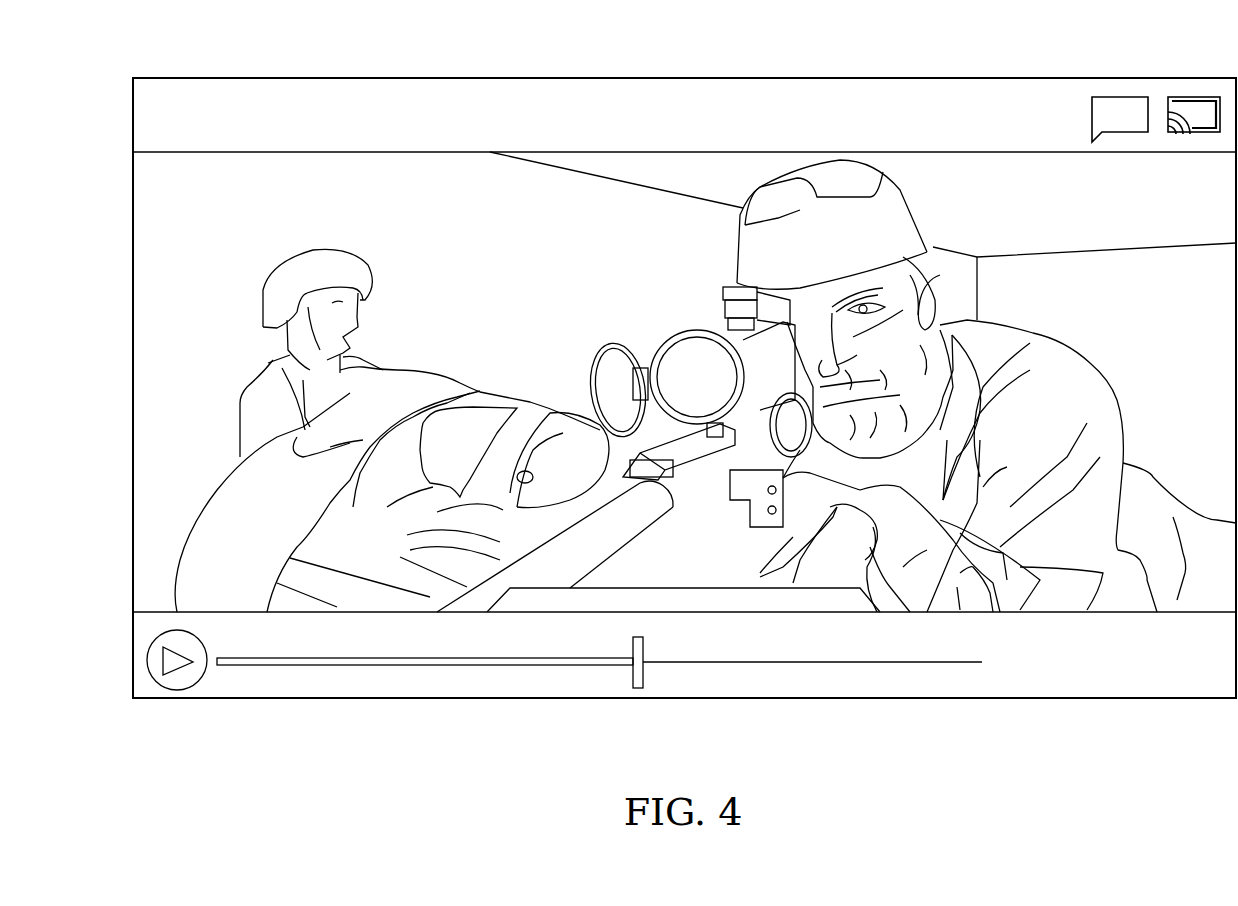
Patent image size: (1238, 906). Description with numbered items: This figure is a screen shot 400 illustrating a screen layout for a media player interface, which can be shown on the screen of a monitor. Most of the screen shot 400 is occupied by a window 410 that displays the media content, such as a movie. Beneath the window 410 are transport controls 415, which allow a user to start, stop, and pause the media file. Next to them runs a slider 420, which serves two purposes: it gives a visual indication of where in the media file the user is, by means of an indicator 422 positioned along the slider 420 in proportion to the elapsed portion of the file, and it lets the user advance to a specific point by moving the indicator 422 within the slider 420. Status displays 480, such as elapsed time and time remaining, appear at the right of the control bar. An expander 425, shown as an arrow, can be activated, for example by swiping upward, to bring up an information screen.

The screen shot 400 is at (700, 44).
The window 410 is at (503, 240).
The transport controls 415 is at (173, 660).
The slider 420 is at (350, 665).
The indicator 422 is at (640, 668).
The expander 425 is at (782, 598).
The status displays 480 is at (1218, 678).